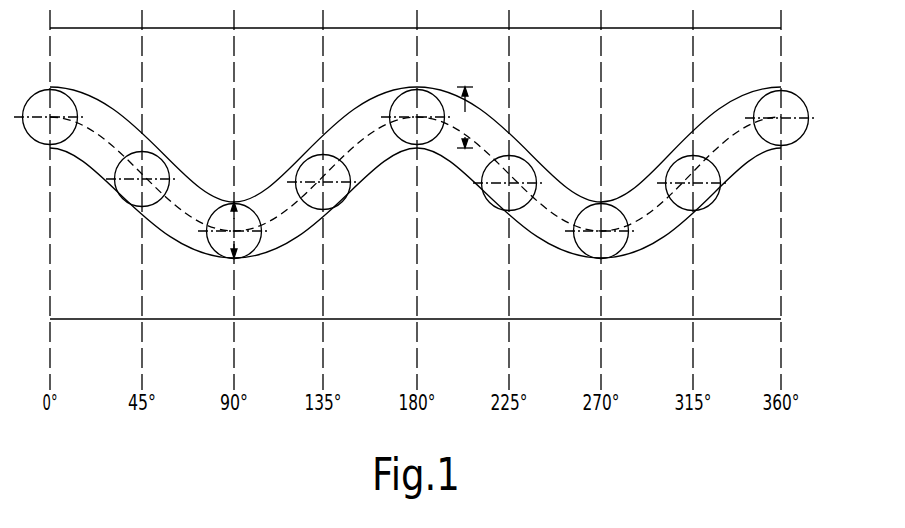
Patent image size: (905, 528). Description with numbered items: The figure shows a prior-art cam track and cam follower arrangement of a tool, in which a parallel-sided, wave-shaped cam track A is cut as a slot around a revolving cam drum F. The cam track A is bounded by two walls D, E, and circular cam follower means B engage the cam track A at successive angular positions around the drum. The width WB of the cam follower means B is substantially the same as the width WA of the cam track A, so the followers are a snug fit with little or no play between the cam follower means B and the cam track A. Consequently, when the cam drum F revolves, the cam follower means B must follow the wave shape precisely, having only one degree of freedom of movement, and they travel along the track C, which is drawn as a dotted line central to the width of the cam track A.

The cam track A is at (415, 159).
The cam follower means B is at (155, 166).
The track C is at (178, 207).
The wall D is at (122, 110).
The wall E is at (83, 168).
The cam drum F is at (632, 100).
The width of the cam track WA is at (462, 117).
The width of the cam follower means WB is at (234, 230).